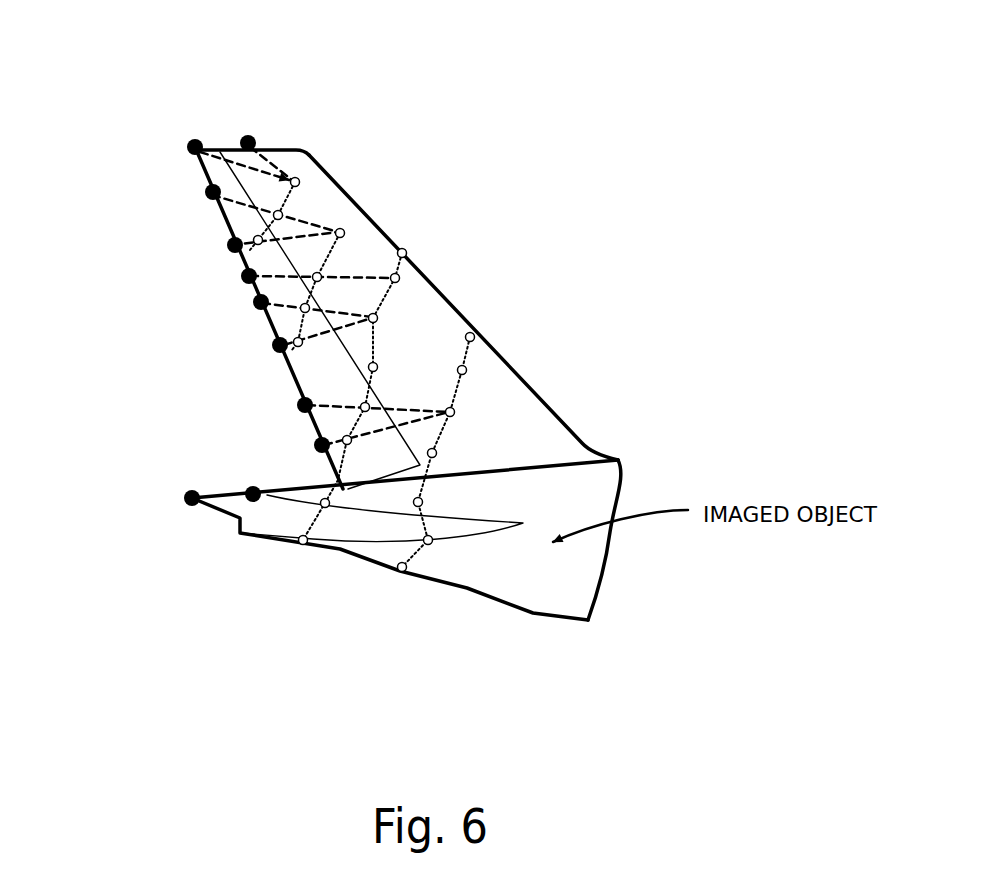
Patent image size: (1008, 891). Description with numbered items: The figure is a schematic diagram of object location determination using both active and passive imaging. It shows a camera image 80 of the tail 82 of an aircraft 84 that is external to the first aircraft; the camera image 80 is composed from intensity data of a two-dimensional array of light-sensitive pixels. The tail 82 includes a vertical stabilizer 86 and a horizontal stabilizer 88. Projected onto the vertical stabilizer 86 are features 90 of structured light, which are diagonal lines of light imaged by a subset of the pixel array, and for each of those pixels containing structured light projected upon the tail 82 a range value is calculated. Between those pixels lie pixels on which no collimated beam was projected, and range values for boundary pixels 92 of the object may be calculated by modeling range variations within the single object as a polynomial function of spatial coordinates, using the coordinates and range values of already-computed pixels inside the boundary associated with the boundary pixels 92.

The camera image 80 is at (129, 111).
The tail 82 is at (455, 432).
The aircraft 84 is at (548, 381).
The vertical stabilizer 86 is at (432, 318).
The horizontal stabilizer 88 is at (287, 512).
The features 90 is at (356, 387).
The boundary pixels 92 is at (240, 276).